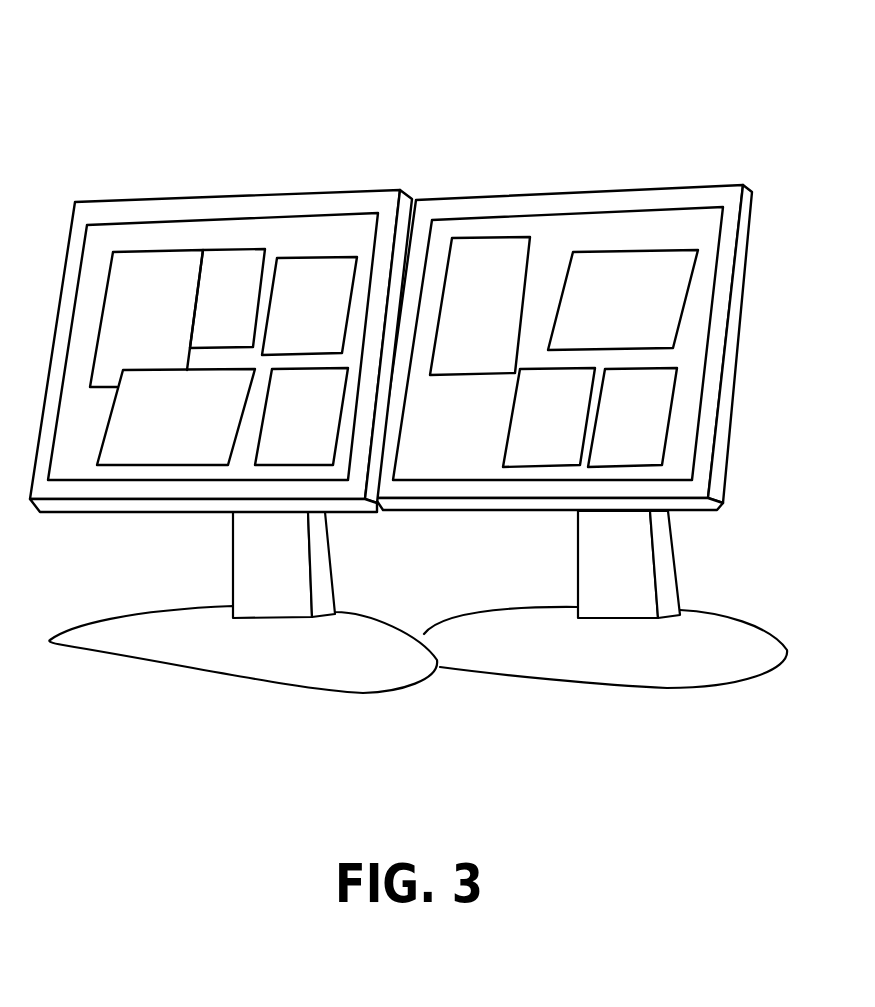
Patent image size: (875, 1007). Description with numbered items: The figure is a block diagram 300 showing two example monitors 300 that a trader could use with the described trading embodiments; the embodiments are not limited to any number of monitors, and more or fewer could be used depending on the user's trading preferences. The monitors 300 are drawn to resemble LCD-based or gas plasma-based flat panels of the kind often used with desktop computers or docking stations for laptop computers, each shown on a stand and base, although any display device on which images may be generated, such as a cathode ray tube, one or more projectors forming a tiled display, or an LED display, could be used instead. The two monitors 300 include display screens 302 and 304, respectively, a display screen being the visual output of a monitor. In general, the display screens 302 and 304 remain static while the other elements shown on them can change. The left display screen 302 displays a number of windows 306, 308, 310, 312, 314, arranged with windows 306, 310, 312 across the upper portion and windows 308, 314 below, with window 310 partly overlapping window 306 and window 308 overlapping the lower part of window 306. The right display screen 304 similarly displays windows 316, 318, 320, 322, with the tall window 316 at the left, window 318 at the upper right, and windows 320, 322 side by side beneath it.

The monitors 300 is at (408, 103).
The display screen 302 is at (281, 234).
The display screen 304 is at (549, 234).
The window 306 is at (187, 288).
The window 308 is at (227, 407).
The window 310 is at (213, 287).
The window 312 is at (295, 292).
The window 314 is at (284, 405).
The window 316 is at (460, 270).
The window 318 is at (582, 282).
The window 320 is at (577, 407).
The window 322 is at (660, 407).